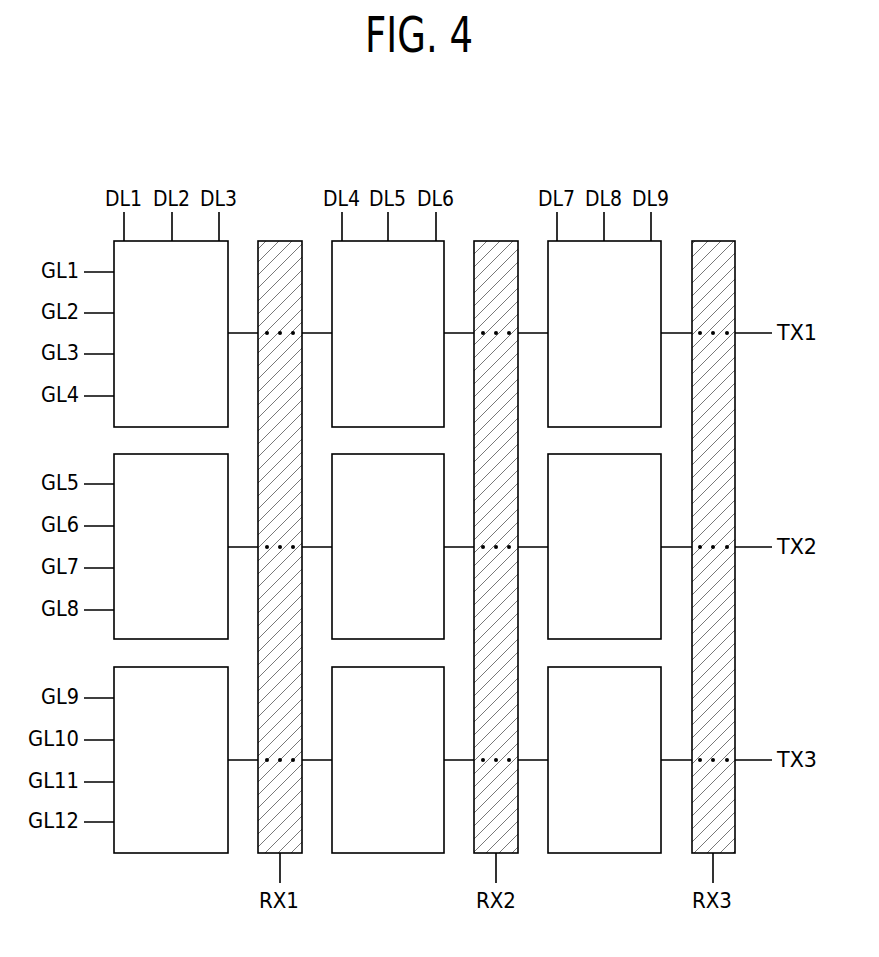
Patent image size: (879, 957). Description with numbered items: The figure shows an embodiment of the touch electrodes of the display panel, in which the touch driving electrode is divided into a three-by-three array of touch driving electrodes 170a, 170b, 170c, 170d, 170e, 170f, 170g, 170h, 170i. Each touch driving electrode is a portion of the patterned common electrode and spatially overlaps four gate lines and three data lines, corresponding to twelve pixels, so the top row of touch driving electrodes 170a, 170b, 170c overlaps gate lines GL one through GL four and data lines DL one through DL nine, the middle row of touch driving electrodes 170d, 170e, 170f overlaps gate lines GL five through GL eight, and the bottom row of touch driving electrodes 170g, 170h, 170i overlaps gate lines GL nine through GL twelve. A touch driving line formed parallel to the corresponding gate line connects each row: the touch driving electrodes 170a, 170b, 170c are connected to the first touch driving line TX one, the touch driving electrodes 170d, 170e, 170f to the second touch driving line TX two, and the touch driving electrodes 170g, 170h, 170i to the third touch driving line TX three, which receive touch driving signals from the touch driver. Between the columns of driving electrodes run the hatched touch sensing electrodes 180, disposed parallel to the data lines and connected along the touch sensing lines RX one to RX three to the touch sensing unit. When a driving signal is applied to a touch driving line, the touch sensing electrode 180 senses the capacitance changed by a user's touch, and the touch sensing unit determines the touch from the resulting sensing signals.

The touch driving electrode 170a is at (196, 343).
The touch driving electrode 170b is at (413, 343).
The touch driving electrode 170c is at (629, 343).
The touch driving electrode 170d is at (196, 557).
The touch driving electrode 170e is at (413, 557).
The touch driving electrode 170f is at (629, 557).
The touch driving electrode 170g is at (196, 770).
The touch driving electrode 170h is at (413, 770).
The touch driving electrode 170i is at (629, 770).
The touch sensing electrode 180 is at (282, 241).